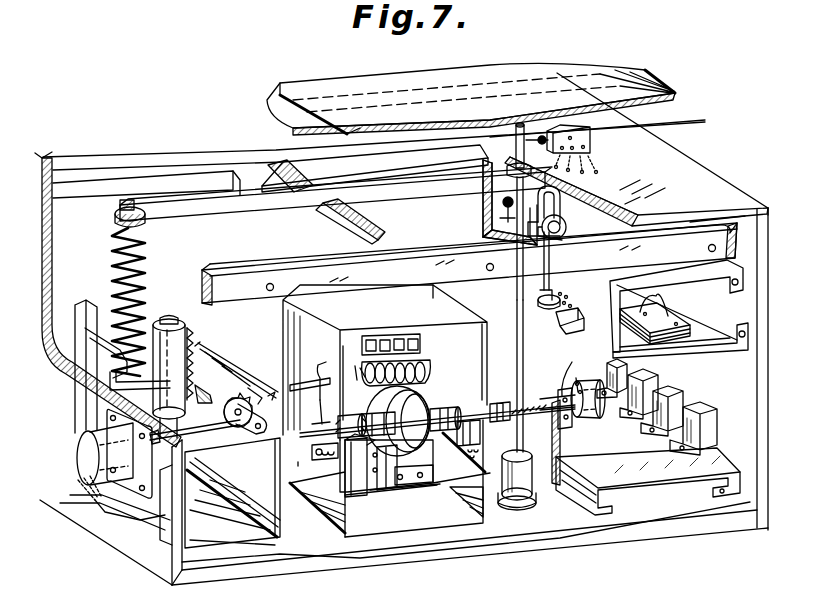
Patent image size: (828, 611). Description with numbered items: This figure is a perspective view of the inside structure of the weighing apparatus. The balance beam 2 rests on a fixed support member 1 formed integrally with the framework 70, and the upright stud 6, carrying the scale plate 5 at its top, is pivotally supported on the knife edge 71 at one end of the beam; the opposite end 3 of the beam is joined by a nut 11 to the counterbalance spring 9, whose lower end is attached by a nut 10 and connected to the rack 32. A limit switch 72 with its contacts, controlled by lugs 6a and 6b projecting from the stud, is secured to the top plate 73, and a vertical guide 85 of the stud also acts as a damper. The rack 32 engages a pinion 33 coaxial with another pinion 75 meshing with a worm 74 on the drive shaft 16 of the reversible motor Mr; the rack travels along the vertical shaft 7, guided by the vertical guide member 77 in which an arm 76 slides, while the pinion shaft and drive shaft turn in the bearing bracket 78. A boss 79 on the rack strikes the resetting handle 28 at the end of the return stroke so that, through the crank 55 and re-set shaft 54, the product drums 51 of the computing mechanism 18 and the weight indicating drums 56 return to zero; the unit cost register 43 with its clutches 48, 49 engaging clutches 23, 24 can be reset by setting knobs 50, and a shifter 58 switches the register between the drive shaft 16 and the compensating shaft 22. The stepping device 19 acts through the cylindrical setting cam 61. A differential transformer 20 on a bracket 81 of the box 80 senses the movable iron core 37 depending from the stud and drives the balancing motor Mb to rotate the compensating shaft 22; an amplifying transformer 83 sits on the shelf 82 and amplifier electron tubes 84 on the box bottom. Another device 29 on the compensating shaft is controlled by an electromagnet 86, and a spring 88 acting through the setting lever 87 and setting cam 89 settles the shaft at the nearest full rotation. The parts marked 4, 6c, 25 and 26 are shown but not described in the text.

The fixed support member 1 is at (243, 163).
The balance beam 2 is at (426, 199).
The opposite end of the balance beam 3 is at (113, 216).
The bracket 4 is at (487, 222).
The scale plate 5 is at (538, 96).
The upright stud 6 is at (515, 306).
The lug 6a is at (556, 140).
The lug 6b is at (557, 211).
The lower end of rod 6c is at (552, 290).
The vertical shaft 7 is at (169, 320).
The counterbalance spring 9 is at (141, 258).
The nut 10 is at (110, 384).
The nut 11 is at (122, 204).
The drive shaft 16 is at (208, 445).
The computing mechanism 18 is at (401, 317).
The stepping device 19 is at (302, 447).
The differential transformer 20 is at (556, 316).
The compensating shaft 22 is at (540, 396).
The clutch 23 is at (346, 344).
The clutch 24 is at (445, 408).
The support plate 25 is at (371, 480).
The coil 26 is at (342, 480).
The resetting handle 28 is at (221, 421).
The device 29 is at (496, 448).
The rack 32 is at (193, 336).
The pinion 33 is at (237, 378).
The movable iron core 37 is at (563, 300).
The unit cost register 43 is at (400, 470).
The clutch 48 is at (392, 421).
The clutch 49 is at (442, 411).
The setting knobs 50 is at (418, 470).
The product drums 51 is at (432, 376).
The re-set shaft 54 is at (320, 368).
The crank 55 is at (300, 386).
The weight indicating drums 56 is at (422, 347).
The shifter 58 is at (388, 495).
The cylindrical setting cam 61 is at (325, 410).
The framework 70 is at (737, 230).
The knife edge 71 is at (567, 226).
The limit switch 72 is at (592, 150).
The top plate 73 is at (648, 152).
The worm 74 is at (240, 446).
The pinion 75 is at (257, 390).
The arm 76 is at (108, 335).
The vertical guide member 77 is at (70, 330).
The bearing bracket 78 is at (283, 522).
The boss 79 is at (190, 486).
The box 80 is at (676, 306).
The bracket 81 is at (575, 378).
The shelf 82 is at (672, 350).
The amplifying transformer 83 is at (660, 313).
The amplifier electron tubes 84 is at (692, 405).
The vertical guide 85 is at (572, 468).
The electromagnet 86 is at (476, 452).
The setting lever 87 is at (521, 433).
The spring 88 is at (570, 436).
The setting cam 89 is at (494, 404).
The reversible motor Mr is at (80, 462).
The balancing motor Mb is at (600, 409).